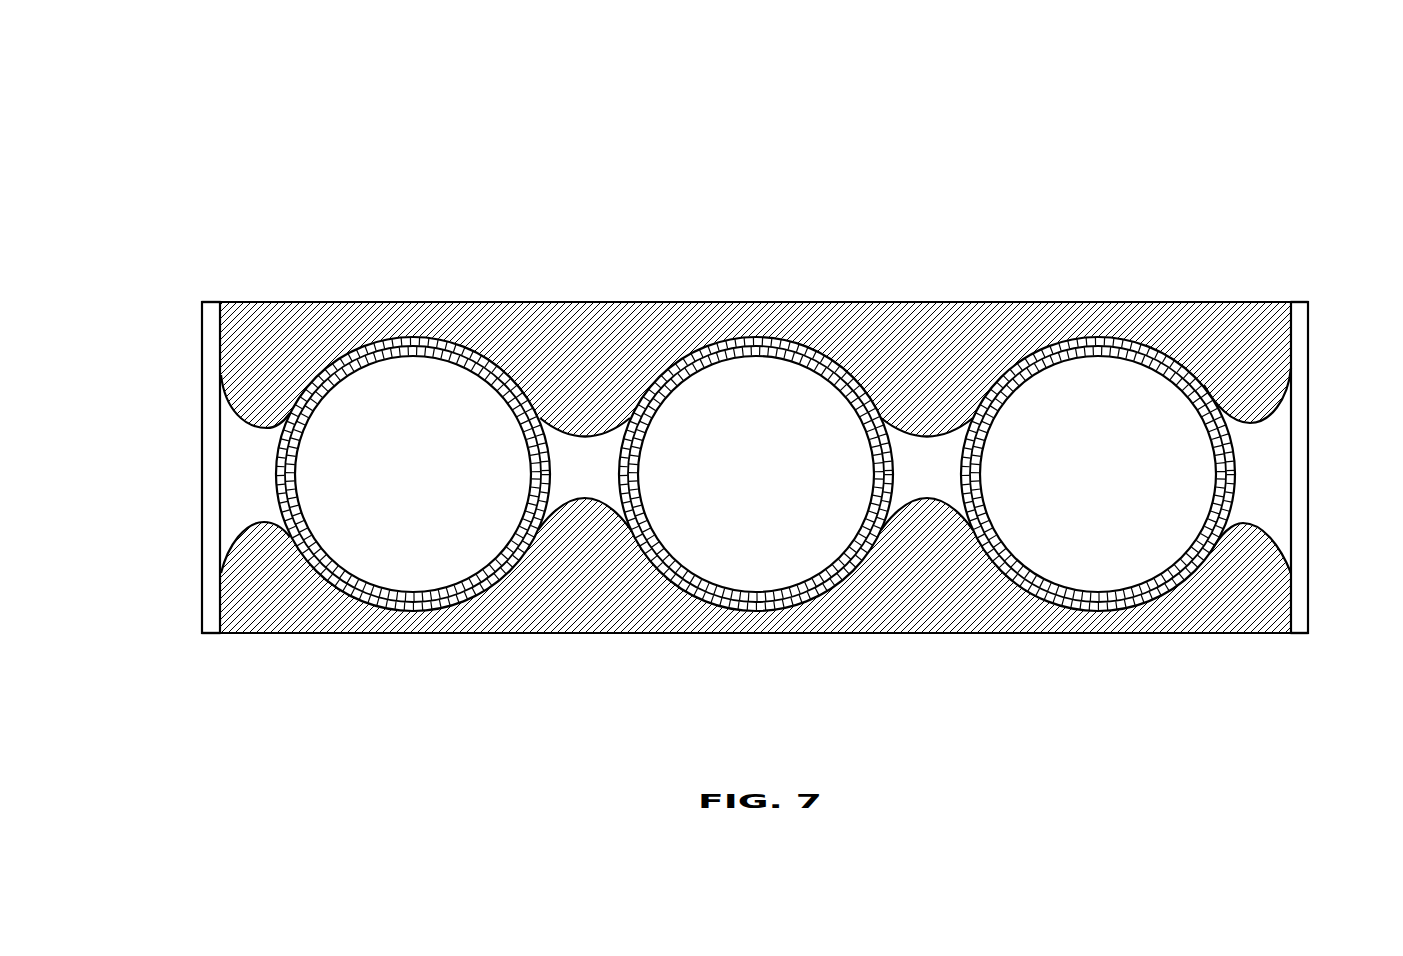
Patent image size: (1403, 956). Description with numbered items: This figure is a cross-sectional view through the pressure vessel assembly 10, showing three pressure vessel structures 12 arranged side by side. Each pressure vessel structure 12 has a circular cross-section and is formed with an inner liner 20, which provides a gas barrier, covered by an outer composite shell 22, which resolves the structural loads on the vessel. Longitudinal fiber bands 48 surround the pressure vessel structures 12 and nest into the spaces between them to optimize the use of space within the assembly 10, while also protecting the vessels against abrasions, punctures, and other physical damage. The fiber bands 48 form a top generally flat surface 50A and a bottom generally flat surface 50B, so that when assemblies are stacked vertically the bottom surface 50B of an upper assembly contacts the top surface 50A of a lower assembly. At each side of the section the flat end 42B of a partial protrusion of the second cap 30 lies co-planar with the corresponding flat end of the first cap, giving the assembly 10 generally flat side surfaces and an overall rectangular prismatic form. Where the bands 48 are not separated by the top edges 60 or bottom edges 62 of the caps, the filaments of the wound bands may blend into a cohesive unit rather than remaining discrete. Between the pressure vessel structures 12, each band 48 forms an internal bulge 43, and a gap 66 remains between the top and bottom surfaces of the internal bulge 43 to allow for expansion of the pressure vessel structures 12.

The assembly 10 is at (932, 173).
The pressure vessel structure 12 is at (432, 325).
The inner liner 20 is at (457, 360).
The outer composite shell 22 is at (483, 352).
The second cap 30 is at (204, 407).
The flat end 42B is at (203, 345).
The internal bulge 43 is at (265, 433).
The longitudinal fiber band 48 is at (268, 350).
The top generally flat surface 50A is at (683, 292).
The bottom generally flat surface 50B is at (780, 648).
The top edge 60 is at (212, 300).
The bottom edge 62 is at (209, 627).
The gap 66 is at (263, 492).